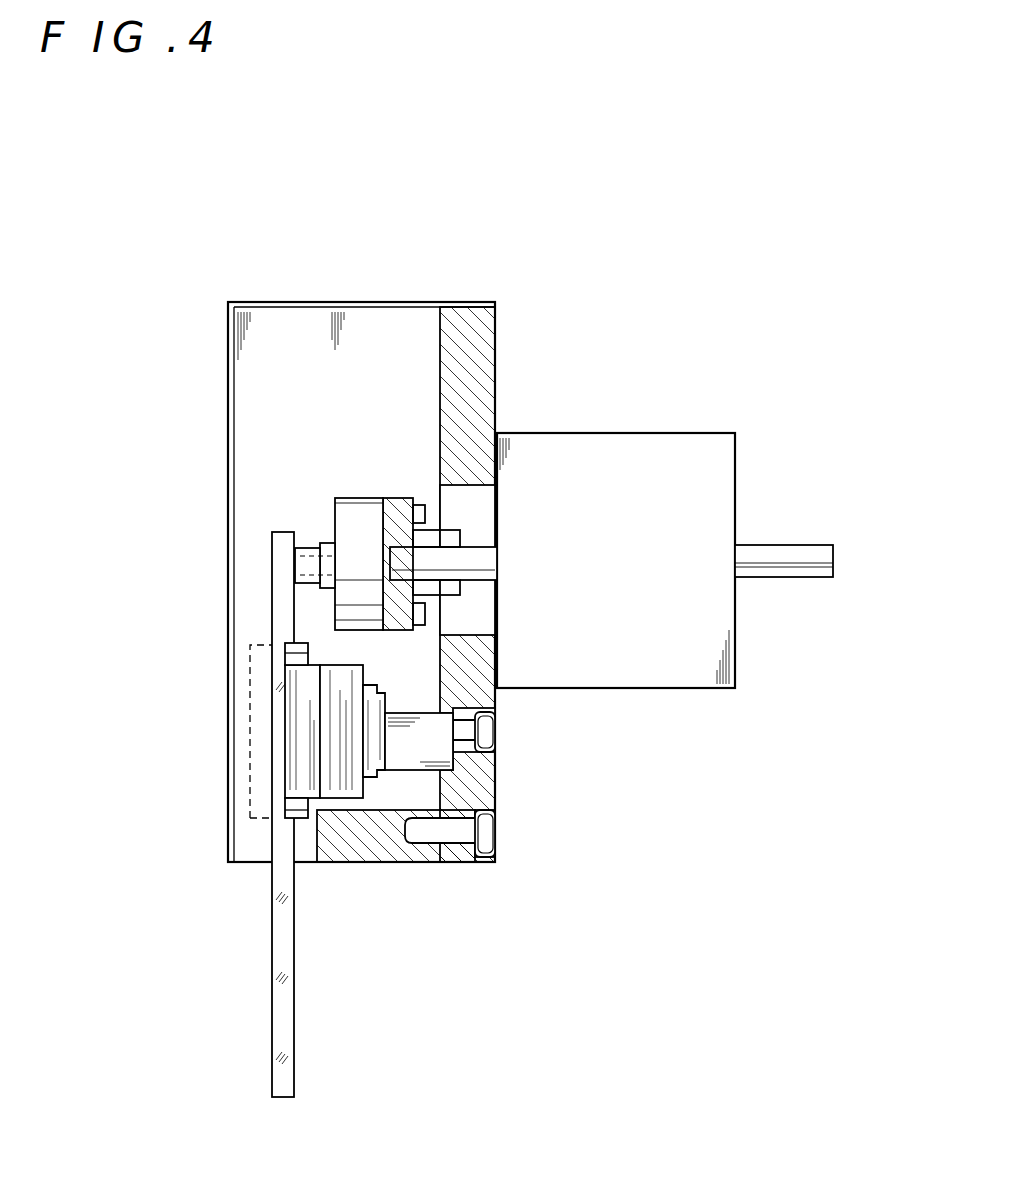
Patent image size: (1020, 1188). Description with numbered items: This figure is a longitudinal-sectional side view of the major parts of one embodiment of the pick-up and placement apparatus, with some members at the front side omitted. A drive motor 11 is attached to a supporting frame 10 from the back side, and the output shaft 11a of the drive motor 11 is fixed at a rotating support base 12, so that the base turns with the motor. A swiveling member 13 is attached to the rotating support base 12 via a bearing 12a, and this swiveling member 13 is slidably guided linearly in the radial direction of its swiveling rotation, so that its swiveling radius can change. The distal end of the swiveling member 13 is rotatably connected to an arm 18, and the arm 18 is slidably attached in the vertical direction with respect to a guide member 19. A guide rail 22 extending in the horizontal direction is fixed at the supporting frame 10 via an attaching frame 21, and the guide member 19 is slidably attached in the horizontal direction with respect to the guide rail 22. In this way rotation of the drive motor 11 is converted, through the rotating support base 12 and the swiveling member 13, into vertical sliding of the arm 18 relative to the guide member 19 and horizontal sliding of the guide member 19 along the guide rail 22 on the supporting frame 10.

The supporting frame 10 is at (495, 360).
The drive motor 11 is at (738, 497).
The output shaft 11a is at (500, 628).
The rotating support base 12 is at (390, 527).
The bearing 12a is at (348, 513).
The swiveling member 13 is at (326, 548).
The arm 18 is at (295, 1020).
The guide member 19 is at (288, 780).
The attaching frame 21 is at (420, 760).
The guide rail 22 is at (378, 777).